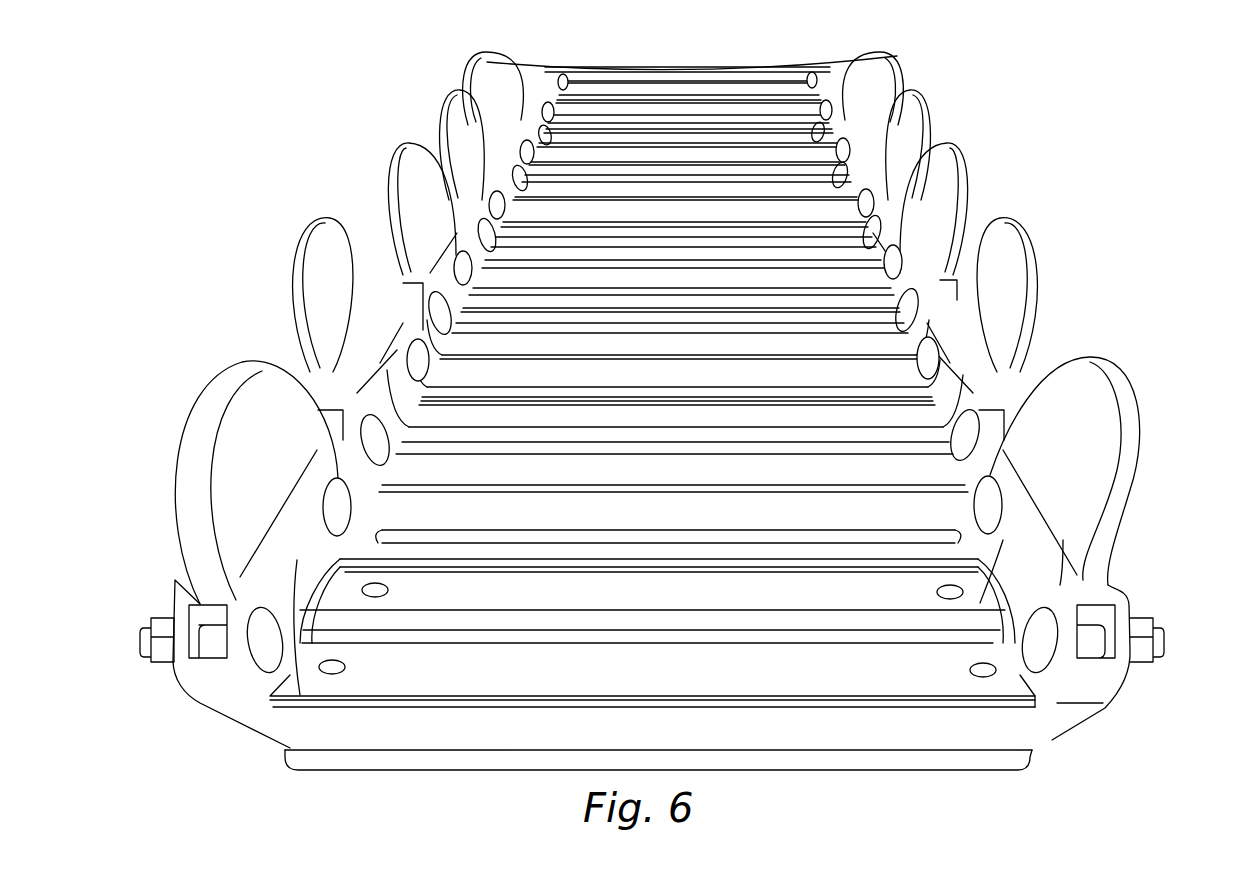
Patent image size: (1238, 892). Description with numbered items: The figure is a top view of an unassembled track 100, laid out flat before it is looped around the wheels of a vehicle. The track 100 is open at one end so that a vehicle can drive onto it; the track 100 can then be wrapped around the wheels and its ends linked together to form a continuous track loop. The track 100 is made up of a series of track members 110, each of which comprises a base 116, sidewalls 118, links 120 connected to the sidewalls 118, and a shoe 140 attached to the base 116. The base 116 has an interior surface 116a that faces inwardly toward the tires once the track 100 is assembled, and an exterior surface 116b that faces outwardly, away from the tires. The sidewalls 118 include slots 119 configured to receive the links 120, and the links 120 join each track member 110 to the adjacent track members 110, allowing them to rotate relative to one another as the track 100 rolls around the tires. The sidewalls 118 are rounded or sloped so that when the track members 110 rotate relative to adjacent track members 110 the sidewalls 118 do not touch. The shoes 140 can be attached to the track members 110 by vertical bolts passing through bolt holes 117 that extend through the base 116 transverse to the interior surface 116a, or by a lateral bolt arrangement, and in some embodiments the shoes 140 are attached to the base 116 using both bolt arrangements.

The cable management system 100 is at (937, 56).
The tray assembly 110 is at (153, 424).
The base plate 116 is at (550, 668).
The upper surface of base plate 116a is at (666, 601).
The lower edge of base plate 116b is at (342, 752).
The mounting holes 117 is at (983, 676).
The right side retaining fingers 118 is at (1127, 360).
The side bracket 119 is at (1090, 662).
The left side retaining fingers 120 is at (300, 318).
The base rail 140 is at (849, 781).